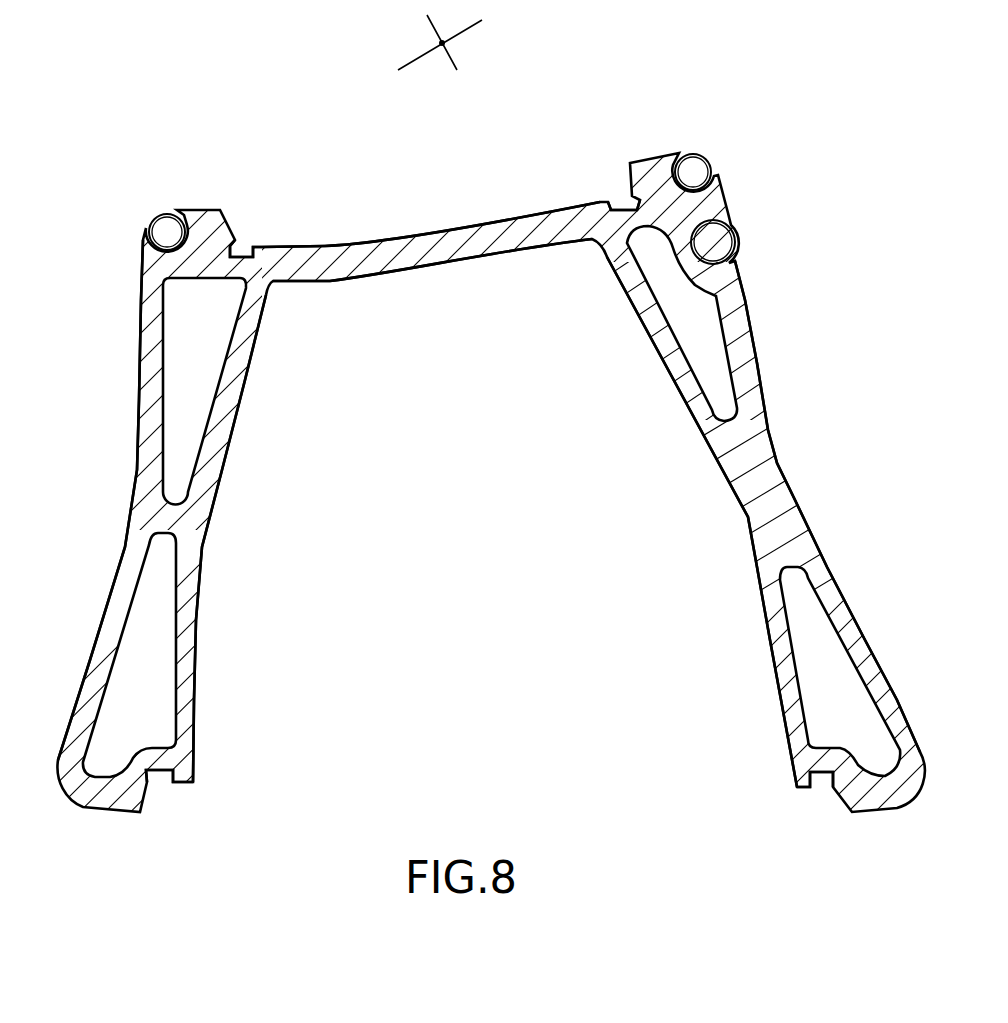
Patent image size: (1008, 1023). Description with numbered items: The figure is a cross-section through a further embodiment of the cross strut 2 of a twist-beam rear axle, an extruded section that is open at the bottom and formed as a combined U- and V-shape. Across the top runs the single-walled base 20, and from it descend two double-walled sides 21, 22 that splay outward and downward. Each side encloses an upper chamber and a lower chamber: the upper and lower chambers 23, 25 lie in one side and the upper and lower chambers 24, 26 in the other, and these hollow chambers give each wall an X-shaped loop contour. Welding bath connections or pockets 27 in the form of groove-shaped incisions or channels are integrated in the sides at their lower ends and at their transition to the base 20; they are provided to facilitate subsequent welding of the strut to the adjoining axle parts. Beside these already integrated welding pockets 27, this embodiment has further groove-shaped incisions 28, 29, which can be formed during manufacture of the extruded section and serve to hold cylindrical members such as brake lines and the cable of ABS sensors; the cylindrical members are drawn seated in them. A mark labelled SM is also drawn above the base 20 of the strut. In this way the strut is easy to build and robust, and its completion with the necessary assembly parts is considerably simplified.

The cross strut 2 is at (796, 460).
The base 20 is at (440, 240).
The side 21 is at (157, 512).
The side 22 is at (770, 497).
The upper chamber 23 is at (205, 373).
The upper chamber 24 is at (682, 333).
The lower chamber 25 is at (160, 652).
The lower chamber 26 is at (812, 658).
The welding pocket 27 is at (244, 255).
The groove-shaped incision 28 is at (199, 222).
The groove-shaped incision 29 is at (714, 260).
The center of symmetry SM is at (524, 32).